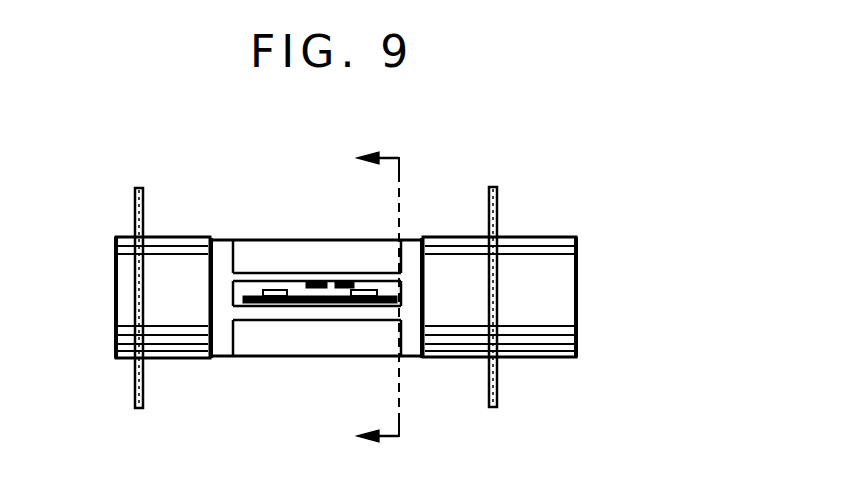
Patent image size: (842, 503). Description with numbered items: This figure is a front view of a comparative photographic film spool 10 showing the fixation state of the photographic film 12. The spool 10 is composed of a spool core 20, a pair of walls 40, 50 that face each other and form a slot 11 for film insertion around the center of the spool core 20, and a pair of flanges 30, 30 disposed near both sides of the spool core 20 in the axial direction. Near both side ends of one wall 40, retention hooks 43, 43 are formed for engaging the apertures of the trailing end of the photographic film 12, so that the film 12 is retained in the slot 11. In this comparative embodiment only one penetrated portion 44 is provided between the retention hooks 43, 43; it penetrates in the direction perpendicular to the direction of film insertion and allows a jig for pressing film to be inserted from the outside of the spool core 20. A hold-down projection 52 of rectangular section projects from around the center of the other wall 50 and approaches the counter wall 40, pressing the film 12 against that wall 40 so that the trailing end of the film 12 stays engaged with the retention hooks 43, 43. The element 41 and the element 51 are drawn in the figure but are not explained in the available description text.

The photographic film spool 10 is at (264, 192).
The slot 11 is at (402, 293).
The photographic film 12 is at (254, 288).
The spool core 20 is at (222, 239).
The flange 30 is at (135, 207).
The wall 40 is at (238, 352).
The holder wall 41 is at (403, 308).
The retention hook 43 is at (276, 305).
The penetrated portion 44 is at (320, 308).
The wall 50 is at (287, 286).
The electrode 51 is at (357, 282).
The hold-down projection 52 is at (332, 283).